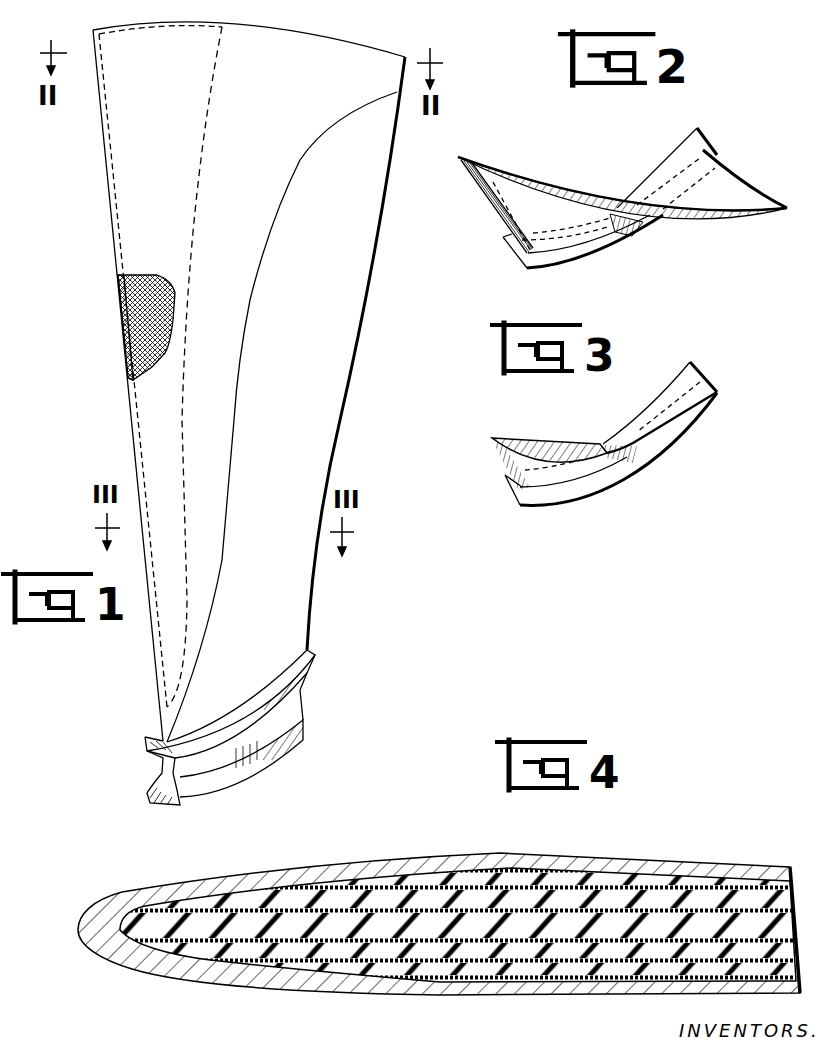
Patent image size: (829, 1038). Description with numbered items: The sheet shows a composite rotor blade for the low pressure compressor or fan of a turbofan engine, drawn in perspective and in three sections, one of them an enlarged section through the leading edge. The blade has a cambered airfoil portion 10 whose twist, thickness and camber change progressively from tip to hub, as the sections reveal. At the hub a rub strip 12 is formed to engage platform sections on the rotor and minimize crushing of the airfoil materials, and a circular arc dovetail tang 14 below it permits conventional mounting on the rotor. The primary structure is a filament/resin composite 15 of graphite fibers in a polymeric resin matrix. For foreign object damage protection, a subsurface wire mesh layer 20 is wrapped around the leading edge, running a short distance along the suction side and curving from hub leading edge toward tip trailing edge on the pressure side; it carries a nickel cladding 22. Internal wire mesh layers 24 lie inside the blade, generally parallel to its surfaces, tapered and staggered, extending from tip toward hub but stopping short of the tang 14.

In FIG. 1, the cambered airfoil portion 10 is at (356, 363).
In FIG. 2, the cambered airfoil portion 10 is at (700, 216).
In FIG. 3, the cambered airfoil portion 10 is at (514, 438).
In FIG. 4, the cambered airfoil portion 10 is at (500, 997).
In FIG. 1, the rub strip 12 is at (317, 660).
In FIG. 2, the rub strip 12 is at (637, 240).
In FIG. 3, the rub strip 12 is at (562, 500).
In FIG. 1, the circular arc dovetail tang 14 is at (308, 730).
In FIG. 4, the filament/resin composite 15 is at (763, 897).
In FIG. 1, the subsurface wire mesh layer 20 is at (137, 300).
In FIG. 4, the subsurface wire mesh layer 20 is at (253, 965).
In FIG. 1, the nickel cladding 22 is at (116, 188).
In FIG. 4, the nickel cladding 22 is at (150, 975).
In FIG. 1, the internal wire mesh layers 24 is at (202, 137).
In FIG. 4, the internal wire mesh layers 24 is at (717, 903).